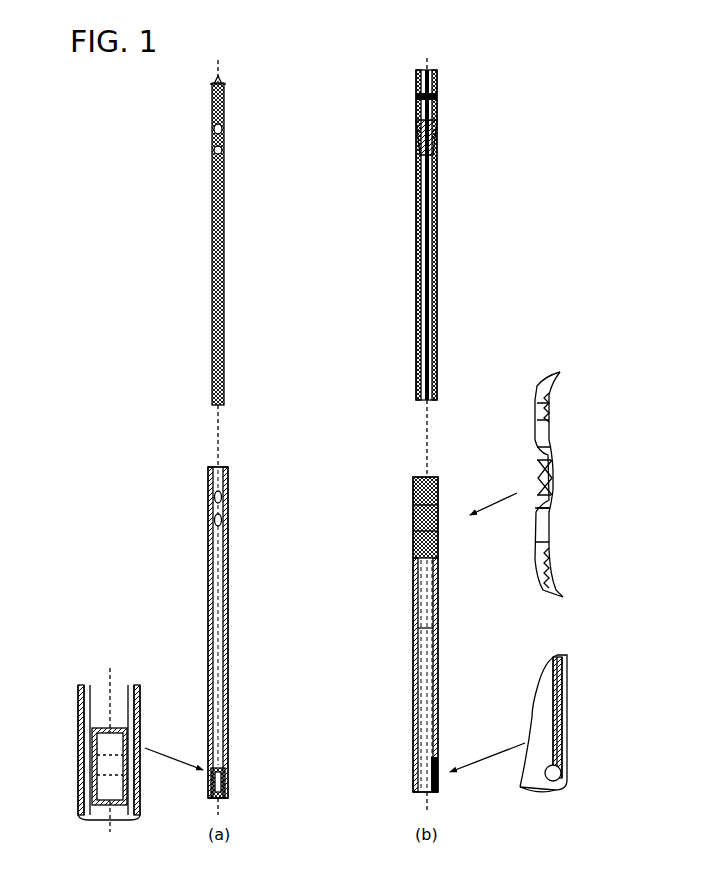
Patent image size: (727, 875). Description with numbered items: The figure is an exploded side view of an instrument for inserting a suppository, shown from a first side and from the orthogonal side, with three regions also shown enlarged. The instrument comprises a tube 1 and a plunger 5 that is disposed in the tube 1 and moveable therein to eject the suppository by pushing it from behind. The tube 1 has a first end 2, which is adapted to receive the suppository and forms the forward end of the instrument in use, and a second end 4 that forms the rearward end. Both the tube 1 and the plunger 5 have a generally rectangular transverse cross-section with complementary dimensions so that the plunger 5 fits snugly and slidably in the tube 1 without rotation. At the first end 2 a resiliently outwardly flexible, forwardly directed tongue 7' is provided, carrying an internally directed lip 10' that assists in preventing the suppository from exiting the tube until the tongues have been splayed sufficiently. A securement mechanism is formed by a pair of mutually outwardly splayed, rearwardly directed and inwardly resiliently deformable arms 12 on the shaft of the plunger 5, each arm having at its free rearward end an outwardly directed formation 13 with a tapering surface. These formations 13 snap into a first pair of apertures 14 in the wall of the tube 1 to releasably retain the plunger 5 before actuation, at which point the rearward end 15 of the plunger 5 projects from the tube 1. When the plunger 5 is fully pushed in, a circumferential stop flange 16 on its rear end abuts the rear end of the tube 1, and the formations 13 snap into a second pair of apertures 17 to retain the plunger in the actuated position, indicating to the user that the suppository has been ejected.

The tube 1 is at (207, 606).
The first end 2 is at (245, 790).
The second end 4 is at (240, 476).
The plunger 5 is at (234, 297).
The tongue 7' is at (337, 737).
The internally directed lip 10' is at (553, 808).
The arms 12 is at (222, 150).
The outwardly directed formations 13 is at (222, 130).
The first pair of apertures 14 is at (214, 498).
The rearward end 15 is at (205, 98).
The circumferential stop flange 16 is at (223, 79).
The second pair of apertures 17 is at (214, 521).